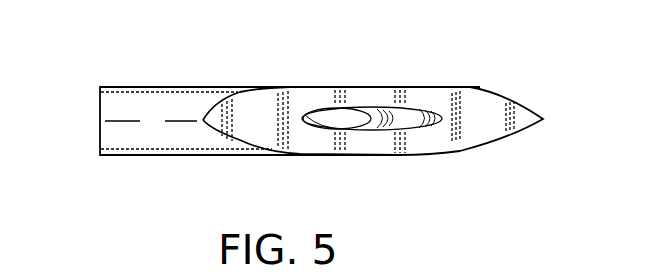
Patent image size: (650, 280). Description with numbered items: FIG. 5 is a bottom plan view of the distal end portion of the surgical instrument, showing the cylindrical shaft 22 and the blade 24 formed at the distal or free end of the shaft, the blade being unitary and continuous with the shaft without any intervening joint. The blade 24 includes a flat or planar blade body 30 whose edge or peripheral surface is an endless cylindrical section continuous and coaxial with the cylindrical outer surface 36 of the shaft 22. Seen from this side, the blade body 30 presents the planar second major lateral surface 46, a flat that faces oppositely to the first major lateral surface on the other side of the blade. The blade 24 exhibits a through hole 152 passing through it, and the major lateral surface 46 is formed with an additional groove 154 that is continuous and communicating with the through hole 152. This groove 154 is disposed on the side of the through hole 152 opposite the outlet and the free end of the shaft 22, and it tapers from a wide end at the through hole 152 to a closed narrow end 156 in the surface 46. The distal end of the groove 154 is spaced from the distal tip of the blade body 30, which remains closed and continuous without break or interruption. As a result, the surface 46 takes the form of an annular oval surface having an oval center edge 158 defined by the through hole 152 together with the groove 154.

The cylindrical shaft 22 is at (110, 145).
The blade 24 is at (383, 167).
The blade body 30 is at (452, 81).
The cylindrical outer surface 36 is at (135, 108).
The second major lateral surface 46 is at (483, 133).
The through hole 152 is at (326, 122).
The additional groove 154 is at (385, 108).
The closed narrow end 156 is at (475, 93).
The oval center edge 158 is at (321, 114).